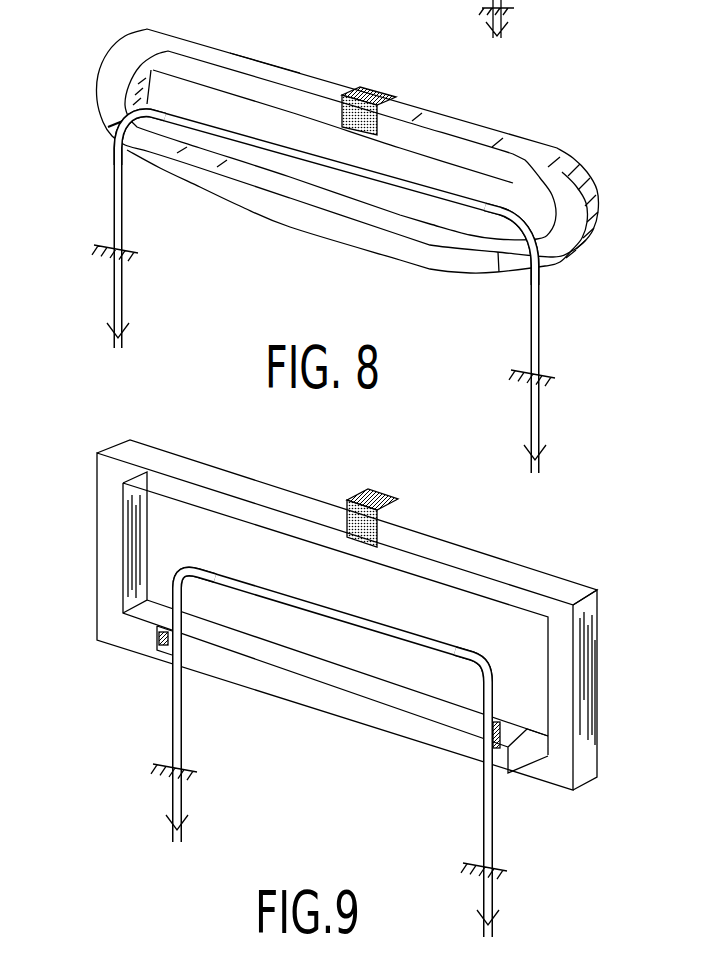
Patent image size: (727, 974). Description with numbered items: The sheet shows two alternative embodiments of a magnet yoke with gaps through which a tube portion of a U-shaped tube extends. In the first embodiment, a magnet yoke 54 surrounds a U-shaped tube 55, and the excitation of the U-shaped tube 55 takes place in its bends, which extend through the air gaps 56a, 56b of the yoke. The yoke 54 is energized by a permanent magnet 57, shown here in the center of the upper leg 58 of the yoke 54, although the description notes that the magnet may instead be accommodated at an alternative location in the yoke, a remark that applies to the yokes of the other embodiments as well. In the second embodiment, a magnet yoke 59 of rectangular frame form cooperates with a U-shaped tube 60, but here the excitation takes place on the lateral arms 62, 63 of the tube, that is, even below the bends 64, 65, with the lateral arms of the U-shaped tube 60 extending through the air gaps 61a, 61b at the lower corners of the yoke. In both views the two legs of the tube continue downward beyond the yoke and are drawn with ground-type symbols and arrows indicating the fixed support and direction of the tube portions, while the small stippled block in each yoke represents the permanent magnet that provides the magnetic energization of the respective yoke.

In FIG. 8, the magnet yoke 54 is at (535, 121).
In FIG. 8, the U-shaped tube 55 is at (540, 420).
In FIG. 8, the air gap 56a is at (110, 138).
In FIG. 8, the air gap 56b is at (545, 251).
In FIG. 8, the permanent magnet 57 is at (372, 93).
In FIG. 8, the upper leg 58 is at (258, 61).
In FIG. 9, the magnet yoke 59 is at (546, 546).
In FIG. 9, the U-shaped tube 60 is at (492, 904).
In FIG. 9, the air gap 61a is at (165, 655).
In FIG. 9, the air gap 61b is at (497, 757).
In FIG. 9, the lateral arm 62 is at (170, 740).
In FIG. 9, the lateral arm 63 is at (487, 817).
In FIG. 9, the bend 64 is at (183, 565).
In FIG. 9, the bend 65 is at (484, 668).